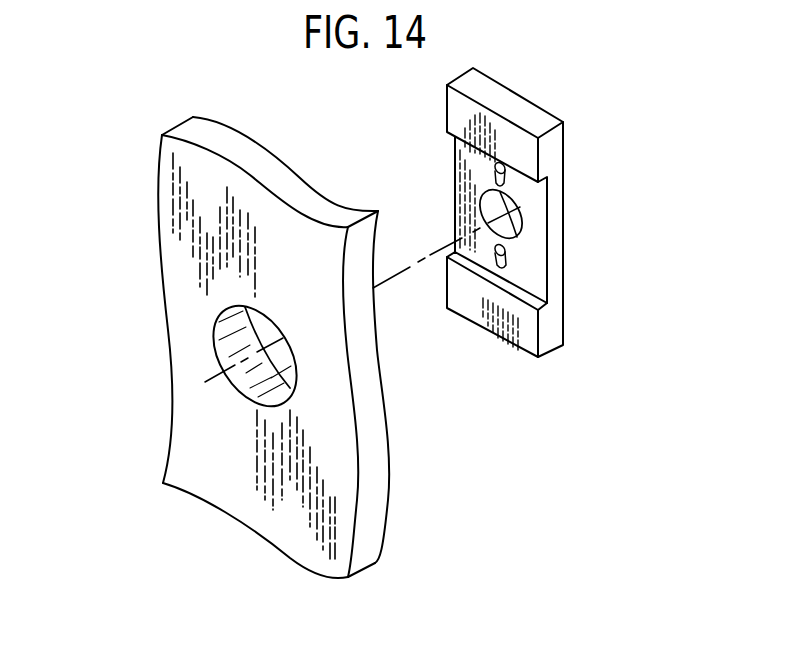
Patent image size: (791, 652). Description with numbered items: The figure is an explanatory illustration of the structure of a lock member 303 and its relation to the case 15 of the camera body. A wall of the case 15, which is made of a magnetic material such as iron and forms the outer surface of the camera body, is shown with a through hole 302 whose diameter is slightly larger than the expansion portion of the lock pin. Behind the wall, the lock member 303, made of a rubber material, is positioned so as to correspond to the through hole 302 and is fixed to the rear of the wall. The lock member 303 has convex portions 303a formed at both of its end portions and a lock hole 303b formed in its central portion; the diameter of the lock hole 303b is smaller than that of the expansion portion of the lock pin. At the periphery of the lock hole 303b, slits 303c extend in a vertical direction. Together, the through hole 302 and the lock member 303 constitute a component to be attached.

The case 15 is at (288, 518).
The through hole 302 is at (221, 363).
The lock member 303 is at (560, 375).
The convex portion 303a is at (528, 150).
The lock hole 303b is at (517, 236).
The slit 303c is at (506, 170).